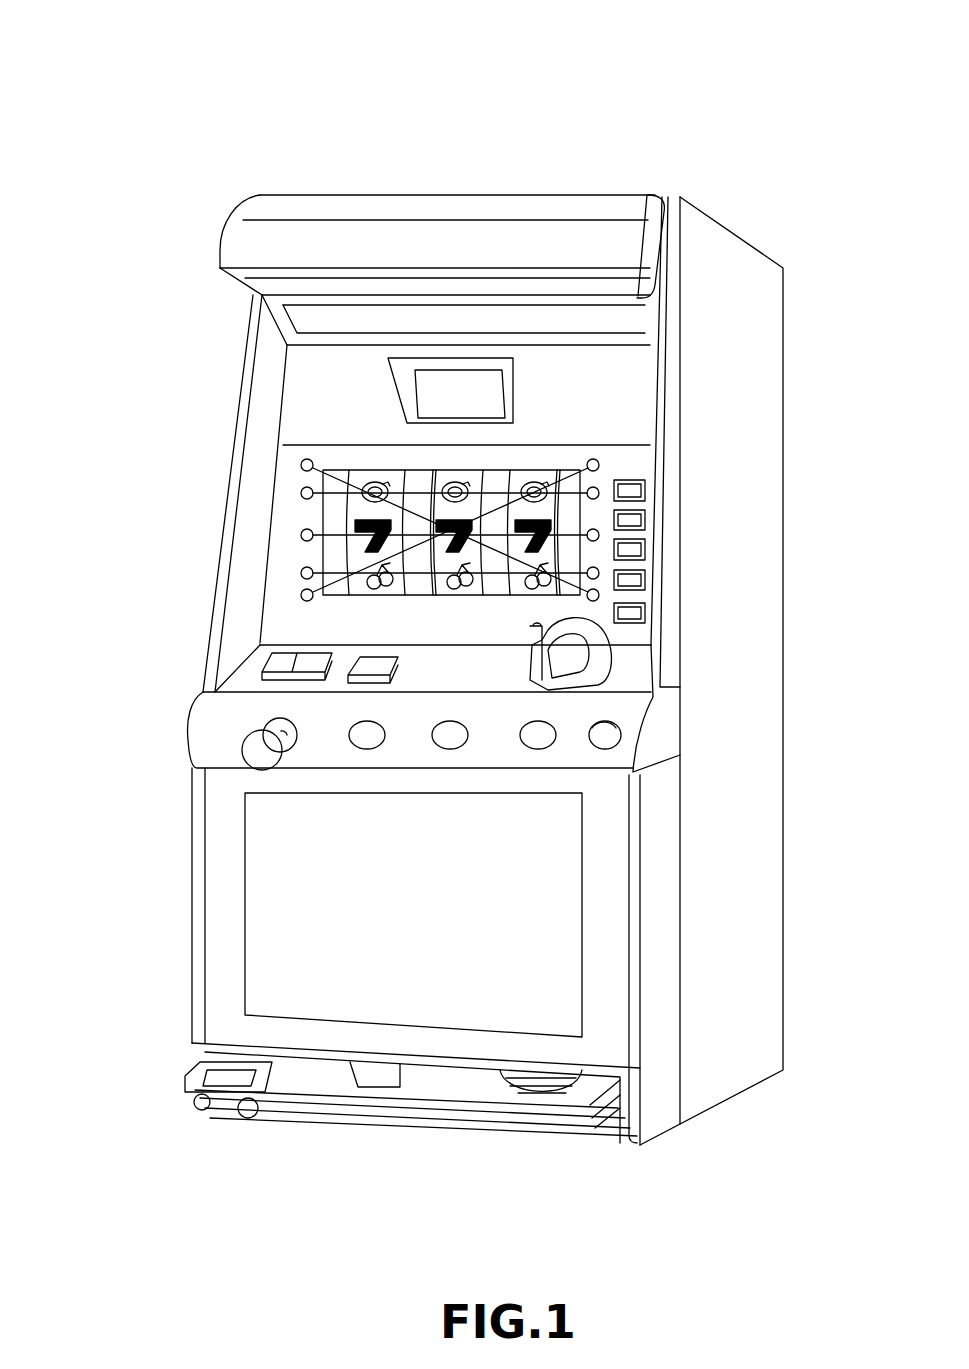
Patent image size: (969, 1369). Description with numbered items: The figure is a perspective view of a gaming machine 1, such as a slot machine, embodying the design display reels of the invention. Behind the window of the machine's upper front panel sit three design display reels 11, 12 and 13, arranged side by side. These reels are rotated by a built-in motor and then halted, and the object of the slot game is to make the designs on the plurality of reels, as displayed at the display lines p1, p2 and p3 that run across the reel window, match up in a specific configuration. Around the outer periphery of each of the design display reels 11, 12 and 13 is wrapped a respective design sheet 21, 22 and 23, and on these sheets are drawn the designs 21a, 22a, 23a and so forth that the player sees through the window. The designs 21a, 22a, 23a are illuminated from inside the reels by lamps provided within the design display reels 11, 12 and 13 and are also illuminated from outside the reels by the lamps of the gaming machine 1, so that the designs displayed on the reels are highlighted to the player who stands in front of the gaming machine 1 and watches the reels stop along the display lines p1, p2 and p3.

The gaming machine 1 is at (748, 212).
The design display reel 11 is at (372, 466).
The design display reel 12 is at (460, 472).
The design display reel 13 is at (541, 473).
The design sheet 21 is at (368, 598).
The design sheet 22 is at (442, 598).
The design sheet 23 is at (527, 598).
The design 21a is at (345, 503).
The design 22a is at (427, 505).
The design 23a is at (562, 518).
The display line p1 is at (332, 507).
The display line p2 is at (330, 451).
The display line p3 is at (342, 598).